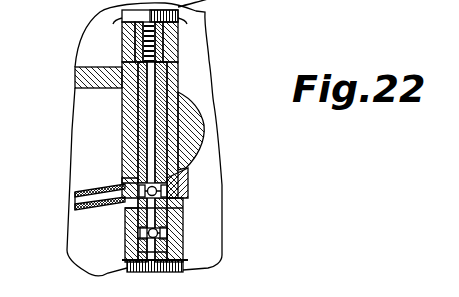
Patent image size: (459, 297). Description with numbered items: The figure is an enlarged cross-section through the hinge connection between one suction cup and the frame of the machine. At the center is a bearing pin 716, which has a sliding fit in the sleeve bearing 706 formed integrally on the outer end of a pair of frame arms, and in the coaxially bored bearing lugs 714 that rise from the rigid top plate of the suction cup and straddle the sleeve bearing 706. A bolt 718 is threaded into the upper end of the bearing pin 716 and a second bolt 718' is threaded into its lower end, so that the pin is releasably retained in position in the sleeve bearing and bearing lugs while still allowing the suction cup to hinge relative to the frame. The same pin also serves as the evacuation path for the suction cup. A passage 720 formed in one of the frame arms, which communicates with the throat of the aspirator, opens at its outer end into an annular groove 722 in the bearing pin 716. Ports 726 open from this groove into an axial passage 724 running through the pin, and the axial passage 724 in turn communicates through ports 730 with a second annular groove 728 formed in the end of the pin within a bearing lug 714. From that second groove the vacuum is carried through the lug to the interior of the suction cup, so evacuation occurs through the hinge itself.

The sleeve bearing 706 is at (197, 97).
The bearing lug 714 is at (122, 41).
The bearing pin 716 is at (138, 97).
The bolt 718 is at (180, 13).
The bolt 718' is at (197, 263).
The passage 720 is at (103, 191).
The annular groove 722 is at (183, 202).
The axial passage 724 is at (170, 142).
The port 726 is at (168, 175).
The second annular groove 728 is at (183, 234).
The port 730 is at (140, 235).